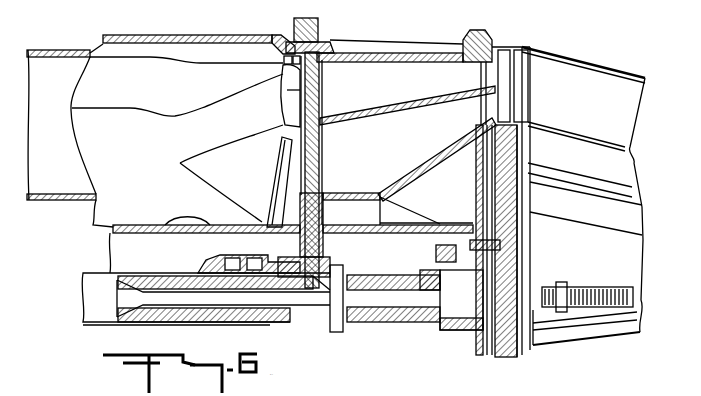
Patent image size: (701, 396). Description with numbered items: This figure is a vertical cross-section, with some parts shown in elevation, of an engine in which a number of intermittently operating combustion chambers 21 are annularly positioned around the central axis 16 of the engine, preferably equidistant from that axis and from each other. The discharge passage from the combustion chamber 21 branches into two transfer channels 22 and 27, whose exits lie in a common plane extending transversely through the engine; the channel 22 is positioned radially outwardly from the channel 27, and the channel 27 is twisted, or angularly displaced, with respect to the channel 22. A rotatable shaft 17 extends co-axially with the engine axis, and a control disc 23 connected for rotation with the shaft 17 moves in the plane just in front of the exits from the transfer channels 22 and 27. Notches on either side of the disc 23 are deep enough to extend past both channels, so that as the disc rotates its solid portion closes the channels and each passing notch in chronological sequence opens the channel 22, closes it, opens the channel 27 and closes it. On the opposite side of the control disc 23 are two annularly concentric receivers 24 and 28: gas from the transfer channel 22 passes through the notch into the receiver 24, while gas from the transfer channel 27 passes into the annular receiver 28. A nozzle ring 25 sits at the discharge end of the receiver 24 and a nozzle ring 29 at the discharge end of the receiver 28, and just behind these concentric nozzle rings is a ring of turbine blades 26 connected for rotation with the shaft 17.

The central axis 16 is at (92, 298).
The rotatable shaft 17 is at (252, 316).
The combustion chamber 21 is at (48, 119).
The transfer channel 22 is at (265, 115).
The control disc 23 is at (322, 256).
The receiver 24 is at (364, 95).
The nozzle ring 25 is at (486, 70).
The ring of turbine blades 26 is at (506, 98).
The transfer channel 27 is at (252, 179).
The annular receiver 28 is at (374, 163).
The nozzle ring 29 is at (486, 102).